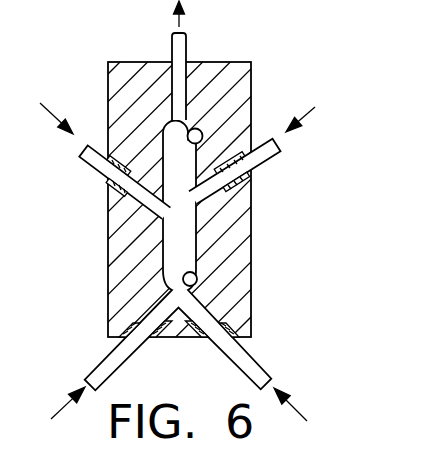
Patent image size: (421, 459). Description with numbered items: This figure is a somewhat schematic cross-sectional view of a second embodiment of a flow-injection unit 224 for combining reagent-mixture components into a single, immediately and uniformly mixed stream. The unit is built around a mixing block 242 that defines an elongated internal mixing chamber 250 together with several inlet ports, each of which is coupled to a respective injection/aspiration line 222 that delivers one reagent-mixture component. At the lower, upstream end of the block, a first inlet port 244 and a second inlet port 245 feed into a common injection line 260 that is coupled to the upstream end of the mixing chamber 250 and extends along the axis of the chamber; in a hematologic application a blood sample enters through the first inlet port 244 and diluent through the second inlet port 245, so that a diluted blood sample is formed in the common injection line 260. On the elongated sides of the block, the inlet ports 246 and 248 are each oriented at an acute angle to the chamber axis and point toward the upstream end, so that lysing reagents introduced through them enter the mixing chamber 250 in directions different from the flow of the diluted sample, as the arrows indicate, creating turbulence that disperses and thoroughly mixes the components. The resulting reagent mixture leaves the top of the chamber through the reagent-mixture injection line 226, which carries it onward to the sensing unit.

The injection/aspiration lines 222 is at (277, 156).
The flow-injection unit 224 is at (272, 56).
The reagent-mixture injection line 226 is at (188, 58).
The mixing block 242 is at (107, 100).
The first inlet port 244 is at (132, 340).
The second inlet port 245 is at (250, 342).
The inlet port 246 is at (108, 178).
The inlet port 248 is at (252, 180).
The mixing chamber 250 is at (201, 136).
The common injection line 260 is at (197, 279).